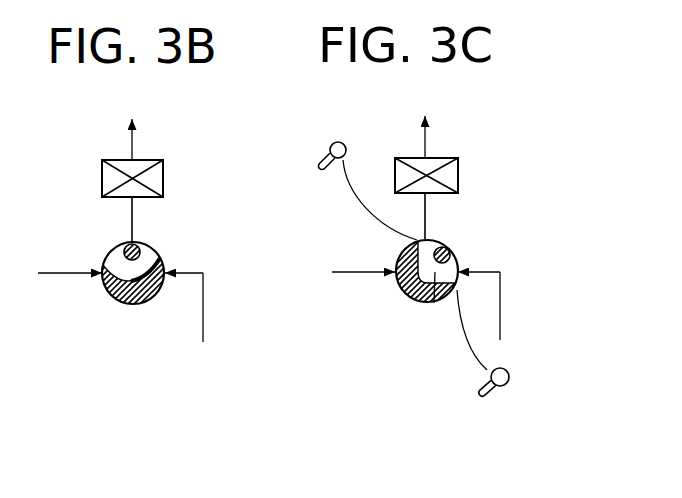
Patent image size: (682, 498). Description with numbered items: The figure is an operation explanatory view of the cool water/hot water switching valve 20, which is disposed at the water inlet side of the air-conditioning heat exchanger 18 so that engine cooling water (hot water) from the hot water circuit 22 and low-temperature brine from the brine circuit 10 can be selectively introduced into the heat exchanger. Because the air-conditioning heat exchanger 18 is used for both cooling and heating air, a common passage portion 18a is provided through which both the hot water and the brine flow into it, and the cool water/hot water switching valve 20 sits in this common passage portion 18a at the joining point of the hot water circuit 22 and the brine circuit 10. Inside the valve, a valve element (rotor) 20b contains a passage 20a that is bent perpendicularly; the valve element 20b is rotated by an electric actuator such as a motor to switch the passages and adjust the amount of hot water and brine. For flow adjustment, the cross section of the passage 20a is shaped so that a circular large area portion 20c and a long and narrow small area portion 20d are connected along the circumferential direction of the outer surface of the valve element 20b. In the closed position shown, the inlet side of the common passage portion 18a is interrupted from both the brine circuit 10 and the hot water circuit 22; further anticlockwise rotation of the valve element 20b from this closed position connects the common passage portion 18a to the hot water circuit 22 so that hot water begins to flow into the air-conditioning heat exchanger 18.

In FIG. 3B, the brine circuit 10 is at (205, 308).
In FIG. 3C, the brine circuit 10 is at (500, 308).
In FIG. 3B, the air-conditioning heat exchanger 18 is at (102, 172).
In FIG. 3C, the air-conditioning heat exchanger 18 is at (458, 172).
In FIG. 3B, the common passage portion 18a is at (133, 217).
In FIG. 3C, the common passage portion 18a is at (426, 215).
In FIG. 3B, the cool water/hot water switching valve 20 is at (110, 300).
In FIG. 3C, the cool water/hot water switching valve 20 is at (407, 300).
In FIG. 3C, the passage 20a is at (434, 303).
In FIG. 3C, the valve element (rotor) 20b is at (398, 287).
In FIG. 3C, the circular large area portion 20c is at (332, 141).
In FIG. 3C, the long and narrow small area portion 20d is at (321, 161).
In FIG. 3B, the hot water circuit 22 is at (50, 273).
In FIG. 3C, the hot water circuit 22 is at (340, 272).